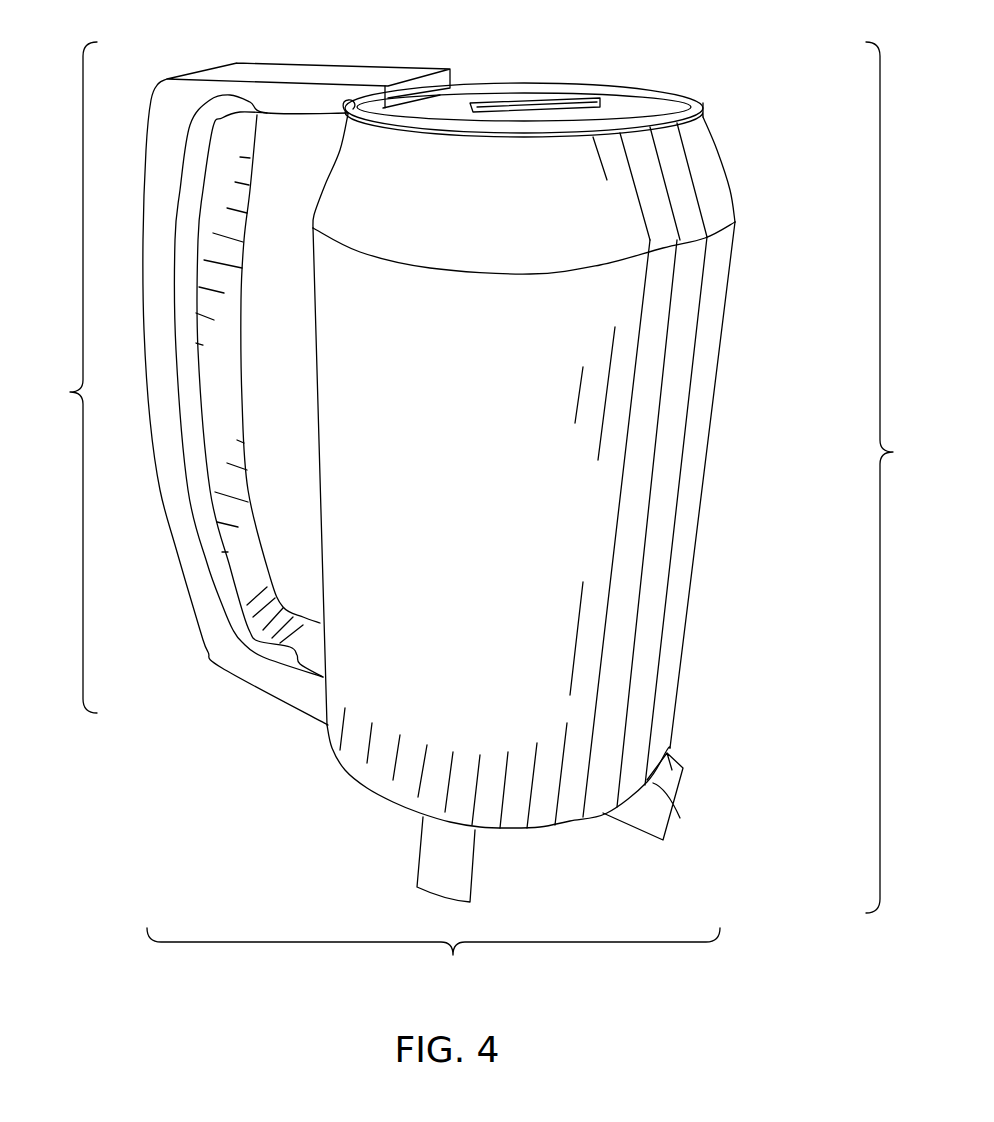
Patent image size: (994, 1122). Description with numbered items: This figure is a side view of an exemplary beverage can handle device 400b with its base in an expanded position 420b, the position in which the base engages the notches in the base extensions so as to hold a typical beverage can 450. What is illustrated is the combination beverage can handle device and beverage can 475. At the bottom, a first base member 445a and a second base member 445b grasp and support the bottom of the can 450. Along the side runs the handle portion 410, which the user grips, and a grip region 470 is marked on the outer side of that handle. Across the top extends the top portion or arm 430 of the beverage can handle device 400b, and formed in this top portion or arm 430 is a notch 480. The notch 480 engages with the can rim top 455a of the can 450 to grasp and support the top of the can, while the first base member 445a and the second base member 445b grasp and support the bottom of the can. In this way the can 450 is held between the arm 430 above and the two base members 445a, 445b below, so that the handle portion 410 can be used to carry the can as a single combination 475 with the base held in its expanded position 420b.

The beverage can handle device 400b is at (55, 377).
The handle portion 410 is at (183, 542).
The expanded position 420b is at (433, 957).
The top portion or arm 430 is at (292, 78).
The first base member 445a is at (655, 821).
The second base member 445b is at (458, 868).
The beverage can 450 is at (776, 75).
The can rim top 455a is at (522, 84).
The grip portion 470 is at (168, 100).
The combination beverage can handle device and beverage can 475 is at (902, 477).
The notch 480 is at (353, 98).